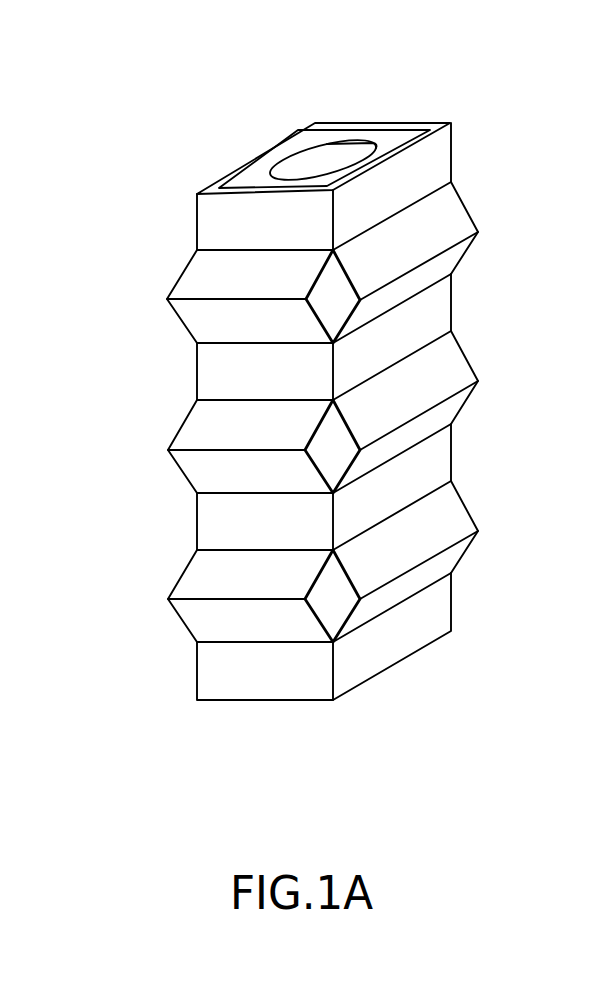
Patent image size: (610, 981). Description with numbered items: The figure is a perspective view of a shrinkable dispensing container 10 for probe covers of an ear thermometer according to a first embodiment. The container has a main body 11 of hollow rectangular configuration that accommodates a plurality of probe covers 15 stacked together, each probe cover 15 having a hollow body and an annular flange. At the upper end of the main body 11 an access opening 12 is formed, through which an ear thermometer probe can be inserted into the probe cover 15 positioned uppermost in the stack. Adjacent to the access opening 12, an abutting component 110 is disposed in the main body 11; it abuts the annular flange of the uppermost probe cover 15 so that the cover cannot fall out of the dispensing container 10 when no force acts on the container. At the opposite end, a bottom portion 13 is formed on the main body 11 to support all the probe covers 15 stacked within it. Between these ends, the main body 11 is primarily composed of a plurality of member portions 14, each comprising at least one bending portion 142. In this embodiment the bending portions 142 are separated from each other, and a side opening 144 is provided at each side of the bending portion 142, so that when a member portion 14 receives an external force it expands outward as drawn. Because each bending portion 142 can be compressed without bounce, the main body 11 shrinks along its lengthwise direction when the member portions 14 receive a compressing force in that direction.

The shrinkable dispensing container 10 is at (43, 47).
The main body 11 is at (177, 225).
The access opening 12 is at (263, 175).
The probe cover 15 is at (303, 162).
The abutting component 110 is at (367, 140).
The member portion 14 is at (141, 372).
The bending portion 142 is at (468, 225).
The side opening 144 is at (338, 308).
The bottom portion 13 is at (203, 676).